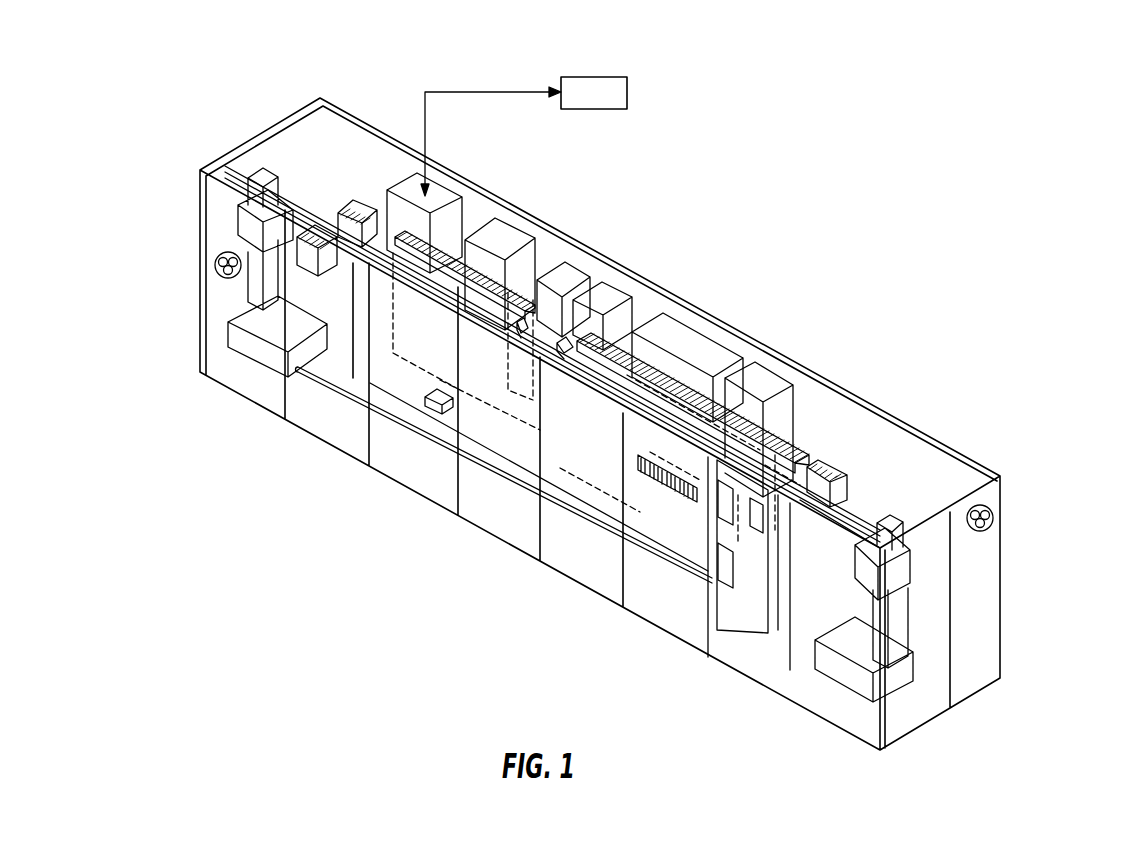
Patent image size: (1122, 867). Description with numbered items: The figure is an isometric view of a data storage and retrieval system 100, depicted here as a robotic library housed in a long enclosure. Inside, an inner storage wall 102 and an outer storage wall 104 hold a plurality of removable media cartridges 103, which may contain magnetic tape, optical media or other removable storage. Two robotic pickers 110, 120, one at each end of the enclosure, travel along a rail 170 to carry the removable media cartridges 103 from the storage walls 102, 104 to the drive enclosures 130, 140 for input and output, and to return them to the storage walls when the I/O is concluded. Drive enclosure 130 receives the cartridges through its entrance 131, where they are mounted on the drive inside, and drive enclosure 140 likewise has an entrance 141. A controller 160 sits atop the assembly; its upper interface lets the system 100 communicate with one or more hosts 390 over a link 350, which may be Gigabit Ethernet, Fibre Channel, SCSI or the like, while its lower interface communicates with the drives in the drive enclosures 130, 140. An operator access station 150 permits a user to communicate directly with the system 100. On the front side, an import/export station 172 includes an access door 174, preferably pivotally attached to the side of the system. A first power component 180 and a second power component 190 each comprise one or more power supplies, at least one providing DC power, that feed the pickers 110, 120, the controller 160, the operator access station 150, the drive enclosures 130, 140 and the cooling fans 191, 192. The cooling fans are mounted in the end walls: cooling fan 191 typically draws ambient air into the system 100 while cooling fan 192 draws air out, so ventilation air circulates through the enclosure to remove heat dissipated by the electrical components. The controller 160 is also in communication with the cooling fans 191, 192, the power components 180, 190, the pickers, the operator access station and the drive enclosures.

The data storage and retrieval system 100 is at (822, 168).
The inner storage wall 102 is at (442, 258).
The removable media cartridges 103 is at (425, 405).
The outer storage wall 104 is at (408, 390).
The robotic picker 110 is at (247, 228).
The robotic picker 120 is at (902, 572).
The drive enclosure 130 is at (573, 277).
The entrance 131 is at (522, 323).
The drive enclosure 140 is at (613, 293).
The entrance 141 is at (680, 330).
The operator access station 150 is at (508, 235).
The controller 160 is at (437, 195).
The rail 170 is at (480, 493).
The import/export station 172 is at (758, 602).
The access door 174 is at (727, 580).
The first power component 180 is at (827, 467).
The second power component 190 is at (810, 527).
The cooling fan 191 is at (995, 512).
The cooling fan 192 is at (215, 268).
The link 350 is at (440, 92).
The hosts 390 is at (615, 77).